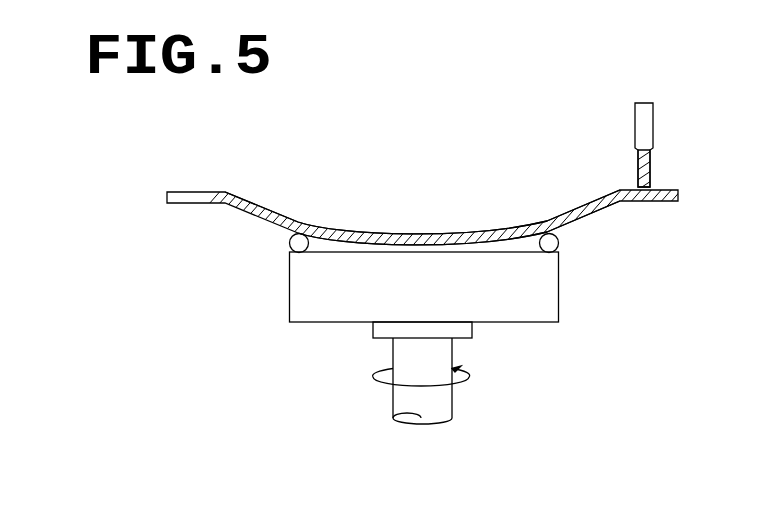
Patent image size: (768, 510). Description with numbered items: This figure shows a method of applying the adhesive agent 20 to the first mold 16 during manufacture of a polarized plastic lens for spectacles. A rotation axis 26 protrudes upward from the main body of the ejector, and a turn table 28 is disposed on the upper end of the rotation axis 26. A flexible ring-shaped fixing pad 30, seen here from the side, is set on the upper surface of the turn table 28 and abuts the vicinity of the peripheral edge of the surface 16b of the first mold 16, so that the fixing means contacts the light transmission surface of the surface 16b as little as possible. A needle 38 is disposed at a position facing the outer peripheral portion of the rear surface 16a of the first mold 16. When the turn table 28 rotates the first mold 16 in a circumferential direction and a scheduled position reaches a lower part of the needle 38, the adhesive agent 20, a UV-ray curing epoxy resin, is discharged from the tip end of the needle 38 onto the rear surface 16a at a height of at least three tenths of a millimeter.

The first mold 16 is at (655, 205).
The rear surface of the first mold 16a is at (557, 210).
The surface of the first mold 16b is at (583, 223).
The adhesive agent 20 is at (653, 171).
The rotation axis 26 is at (442, 403).
The turn table 28 is at (302, 303).
The fixing pad 30 is at (288, 252).
The needle 38 is at (650, 133).